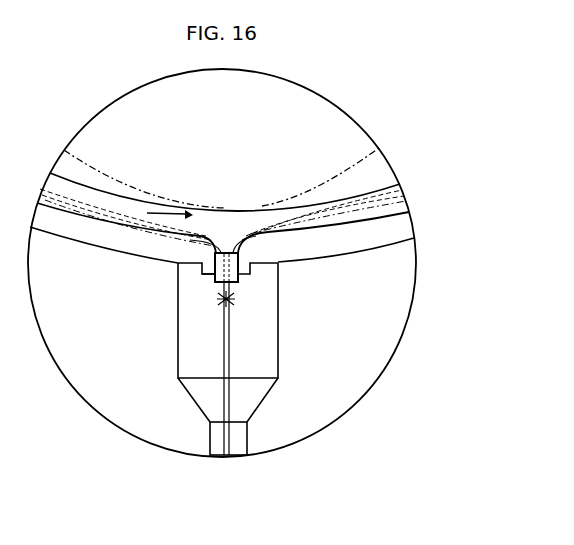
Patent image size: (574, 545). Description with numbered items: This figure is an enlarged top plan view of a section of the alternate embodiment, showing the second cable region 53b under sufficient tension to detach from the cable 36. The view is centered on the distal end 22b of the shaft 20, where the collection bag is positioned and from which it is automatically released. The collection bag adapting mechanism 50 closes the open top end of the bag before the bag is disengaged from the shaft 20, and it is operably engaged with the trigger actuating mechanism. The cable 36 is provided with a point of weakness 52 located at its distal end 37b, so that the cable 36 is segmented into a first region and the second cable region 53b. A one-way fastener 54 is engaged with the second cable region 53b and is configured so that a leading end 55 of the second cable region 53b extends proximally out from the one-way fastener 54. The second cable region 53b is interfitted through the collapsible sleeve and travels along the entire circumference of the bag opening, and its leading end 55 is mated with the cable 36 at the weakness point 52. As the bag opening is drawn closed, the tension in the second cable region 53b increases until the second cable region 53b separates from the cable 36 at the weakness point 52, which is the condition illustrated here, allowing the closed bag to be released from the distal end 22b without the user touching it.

The collection bag adapting mechanism 50 is at (224, 200).
The one-way fastener 54 is at (233, 262).
The second cable region 53b is at (270, 237).
The leading end 55 is at (178, 288).
The point of weakness 52 is at (265, 299).
The distal end 37b is at (218, 299).
The cable 36 is at (229, 366).
The shaft 20 is at (278, 427).
The distal end 22b is at (240, 443).